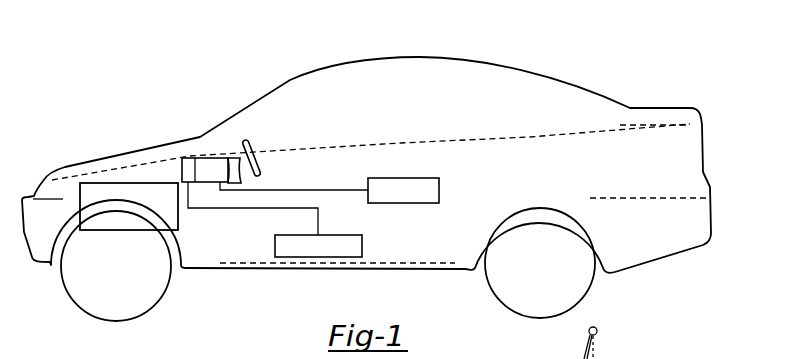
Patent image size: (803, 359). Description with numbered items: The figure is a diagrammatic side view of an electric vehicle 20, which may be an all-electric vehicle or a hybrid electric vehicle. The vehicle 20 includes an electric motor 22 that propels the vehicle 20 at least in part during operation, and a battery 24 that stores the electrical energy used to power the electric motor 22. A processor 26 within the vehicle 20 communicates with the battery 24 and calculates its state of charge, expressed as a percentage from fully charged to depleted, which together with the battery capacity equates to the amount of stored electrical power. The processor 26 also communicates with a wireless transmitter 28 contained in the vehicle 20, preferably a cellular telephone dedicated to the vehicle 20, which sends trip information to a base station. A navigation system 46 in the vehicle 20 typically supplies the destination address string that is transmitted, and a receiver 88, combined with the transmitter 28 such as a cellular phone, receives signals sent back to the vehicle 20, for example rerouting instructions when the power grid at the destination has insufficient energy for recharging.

The electric vehicle 20 is at (428, 56).
The electric motor 22 is at (155, 218).
The battery 24 is at (275, 245).
The processor 26 is at (397, 203).
The wireless transmitter 28 is at (195, 158).
The navigation system 46 is at (250, 148).
The receiver 88 is at (235, 157).